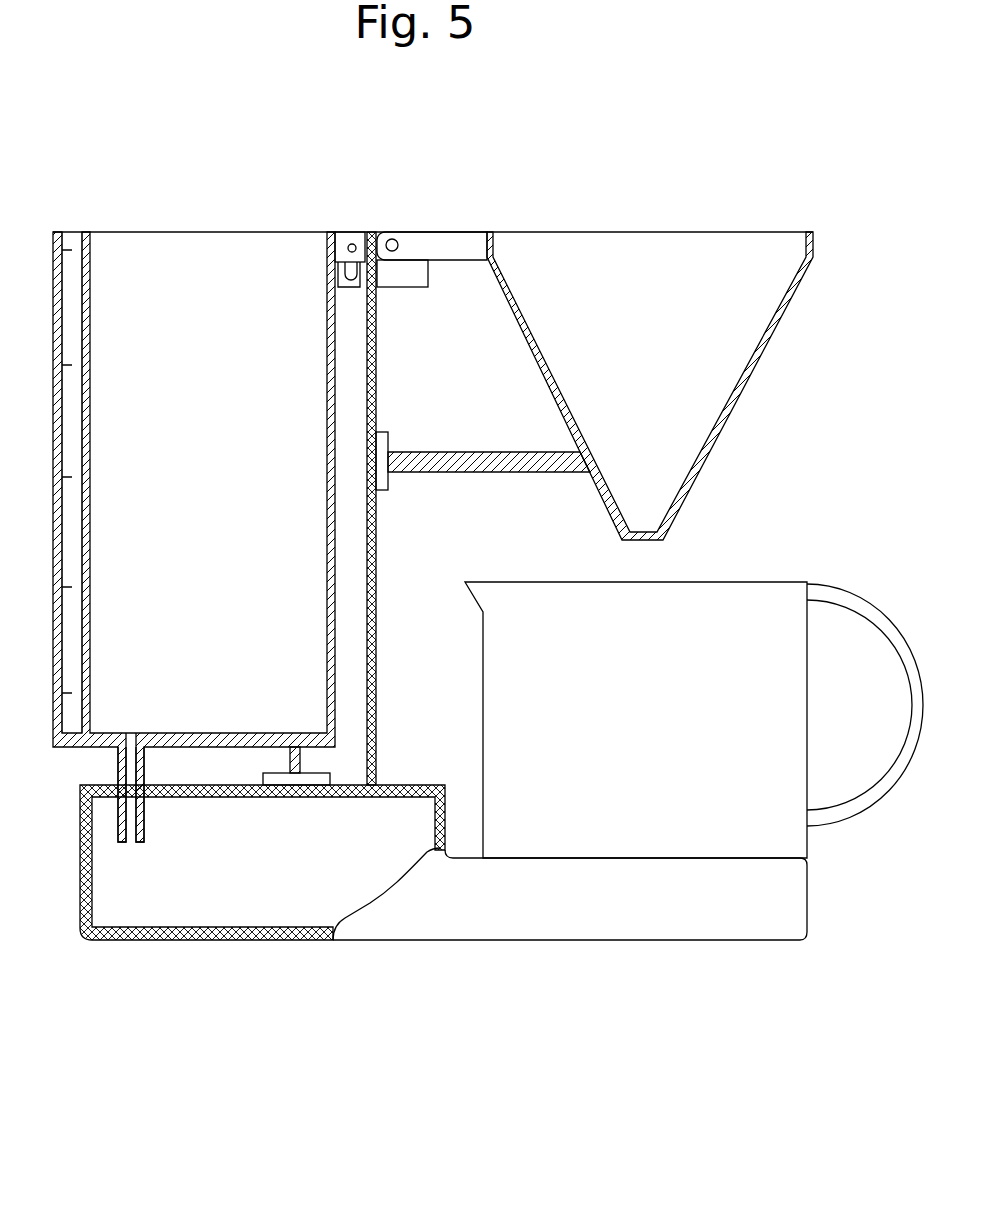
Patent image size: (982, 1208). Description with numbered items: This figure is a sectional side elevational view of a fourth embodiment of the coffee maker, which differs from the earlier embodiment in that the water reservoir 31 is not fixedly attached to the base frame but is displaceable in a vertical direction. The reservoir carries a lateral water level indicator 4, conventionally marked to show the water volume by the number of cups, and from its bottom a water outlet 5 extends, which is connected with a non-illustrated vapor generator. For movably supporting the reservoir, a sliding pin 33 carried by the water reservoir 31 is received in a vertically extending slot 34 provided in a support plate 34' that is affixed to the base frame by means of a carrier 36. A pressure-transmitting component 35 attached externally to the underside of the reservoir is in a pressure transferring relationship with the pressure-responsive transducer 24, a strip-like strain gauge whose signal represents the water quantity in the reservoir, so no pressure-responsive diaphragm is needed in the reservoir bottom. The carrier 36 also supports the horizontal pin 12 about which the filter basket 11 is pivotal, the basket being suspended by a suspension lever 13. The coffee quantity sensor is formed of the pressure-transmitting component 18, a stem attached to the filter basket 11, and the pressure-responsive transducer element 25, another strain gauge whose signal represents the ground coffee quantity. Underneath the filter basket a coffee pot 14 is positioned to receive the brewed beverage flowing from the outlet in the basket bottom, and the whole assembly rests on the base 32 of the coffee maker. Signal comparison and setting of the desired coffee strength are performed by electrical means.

The water level indicator 4 is at (73, 240).
The water reservoir 31 is at (217, 248).
The water outlet 5 is at (138, 843).
The pressure-transmitting component 35 is at (295, 758).
The pressure-responsive transducer 24 is at (323, 780).
The carrier 36 is at (377, 372).
The sliding pin 33 is at (355, 238).
The slot 34 is at (328, 219).
The support plate 34' is at (307, 305).
The suspension lever 13 is at (437, 243).
The pin 12 is at (400, 243).
The filter basket 11 is at (732, 242).
The pressure-responsive transducer element 25 is at (380, 475).
The pressure-transmitting component 18 is at (525, 465).
The coffee pot 14 is at (777, 592).
The base housing 32 is at (473, 925).